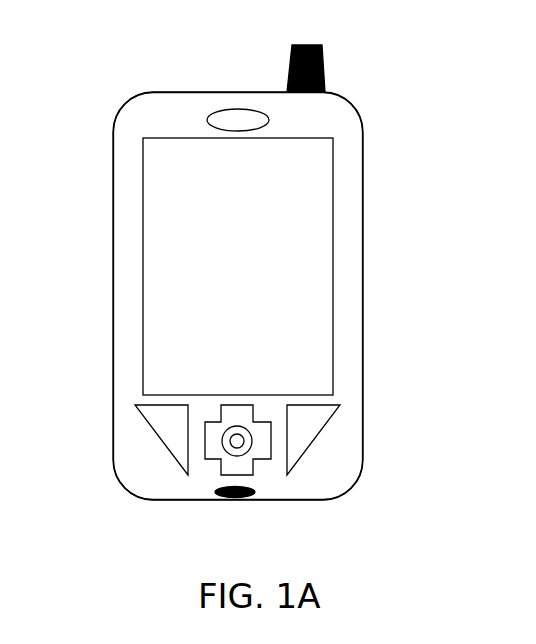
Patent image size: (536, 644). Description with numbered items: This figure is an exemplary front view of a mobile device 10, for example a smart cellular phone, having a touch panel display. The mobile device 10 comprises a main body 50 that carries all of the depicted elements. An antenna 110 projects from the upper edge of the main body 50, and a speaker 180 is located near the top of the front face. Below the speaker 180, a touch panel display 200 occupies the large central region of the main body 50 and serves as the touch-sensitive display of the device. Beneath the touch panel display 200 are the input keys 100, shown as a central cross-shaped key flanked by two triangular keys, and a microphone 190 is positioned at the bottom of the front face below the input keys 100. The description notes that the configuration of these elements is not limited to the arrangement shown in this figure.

The mobile device 10 is at (135, 85).
The main body 50 is at (356, 199).
The input keys 100 is at (209, 459).
The antenna 110 is at (326, 59).
The speaker 180 is at (221, 108).
The microphone 190 is at (258, 496).
The touch panel display 200 is at (169, 247).